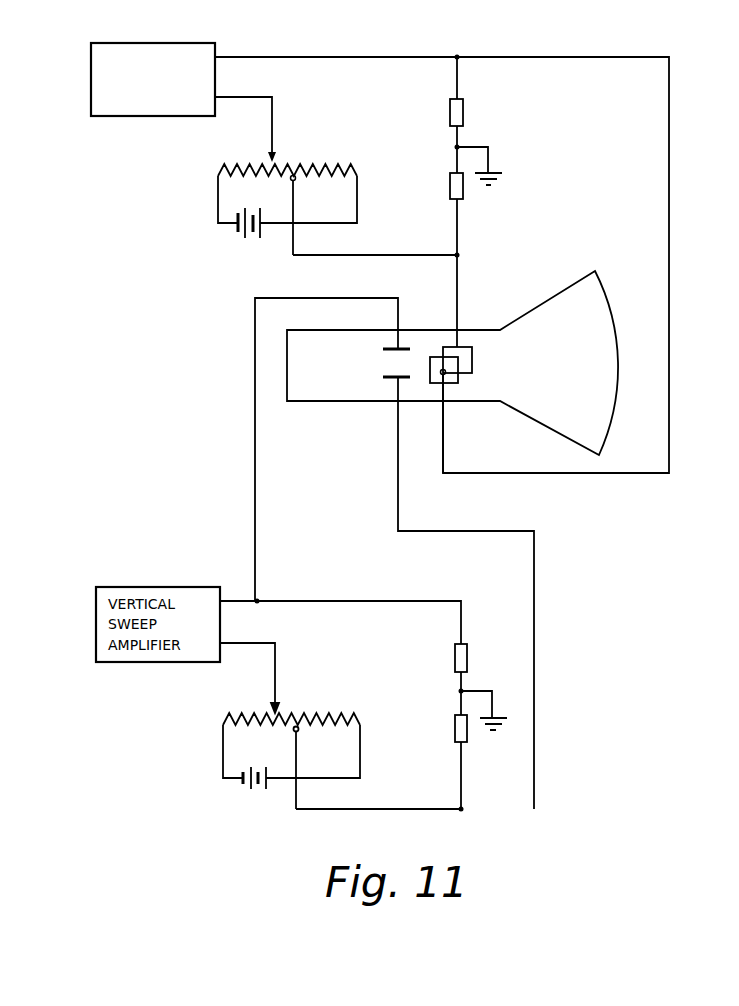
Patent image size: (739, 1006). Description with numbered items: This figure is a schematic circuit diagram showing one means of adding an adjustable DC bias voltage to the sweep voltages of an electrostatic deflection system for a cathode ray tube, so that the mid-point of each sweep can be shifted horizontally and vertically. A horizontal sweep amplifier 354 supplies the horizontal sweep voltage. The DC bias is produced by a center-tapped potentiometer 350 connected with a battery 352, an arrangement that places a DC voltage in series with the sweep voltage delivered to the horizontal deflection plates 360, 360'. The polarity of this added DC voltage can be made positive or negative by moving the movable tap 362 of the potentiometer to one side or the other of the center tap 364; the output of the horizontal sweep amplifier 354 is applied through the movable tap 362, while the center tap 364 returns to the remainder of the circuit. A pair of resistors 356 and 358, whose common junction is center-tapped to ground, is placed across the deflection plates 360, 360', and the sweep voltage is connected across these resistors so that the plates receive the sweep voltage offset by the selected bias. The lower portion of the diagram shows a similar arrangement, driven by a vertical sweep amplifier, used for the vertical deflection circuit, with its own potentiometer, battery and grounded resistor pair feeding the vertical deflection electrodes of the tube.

The horizontal sweep amplifier 354 is at (172, 41).
The center-tapped potentiometer 350 is at (331, 166).
The movable tap 362 is at (276, 160).
The center tap 364 is at (296, 180).
The battery 352 is at (241, 240).
The resistor 356 is at (463, 118).
The resistor 358 is at (463, 190).
The horizontal deflection plate 360 is at (478, 328).
The horizontal deflection plate 360' is at (474, 415).